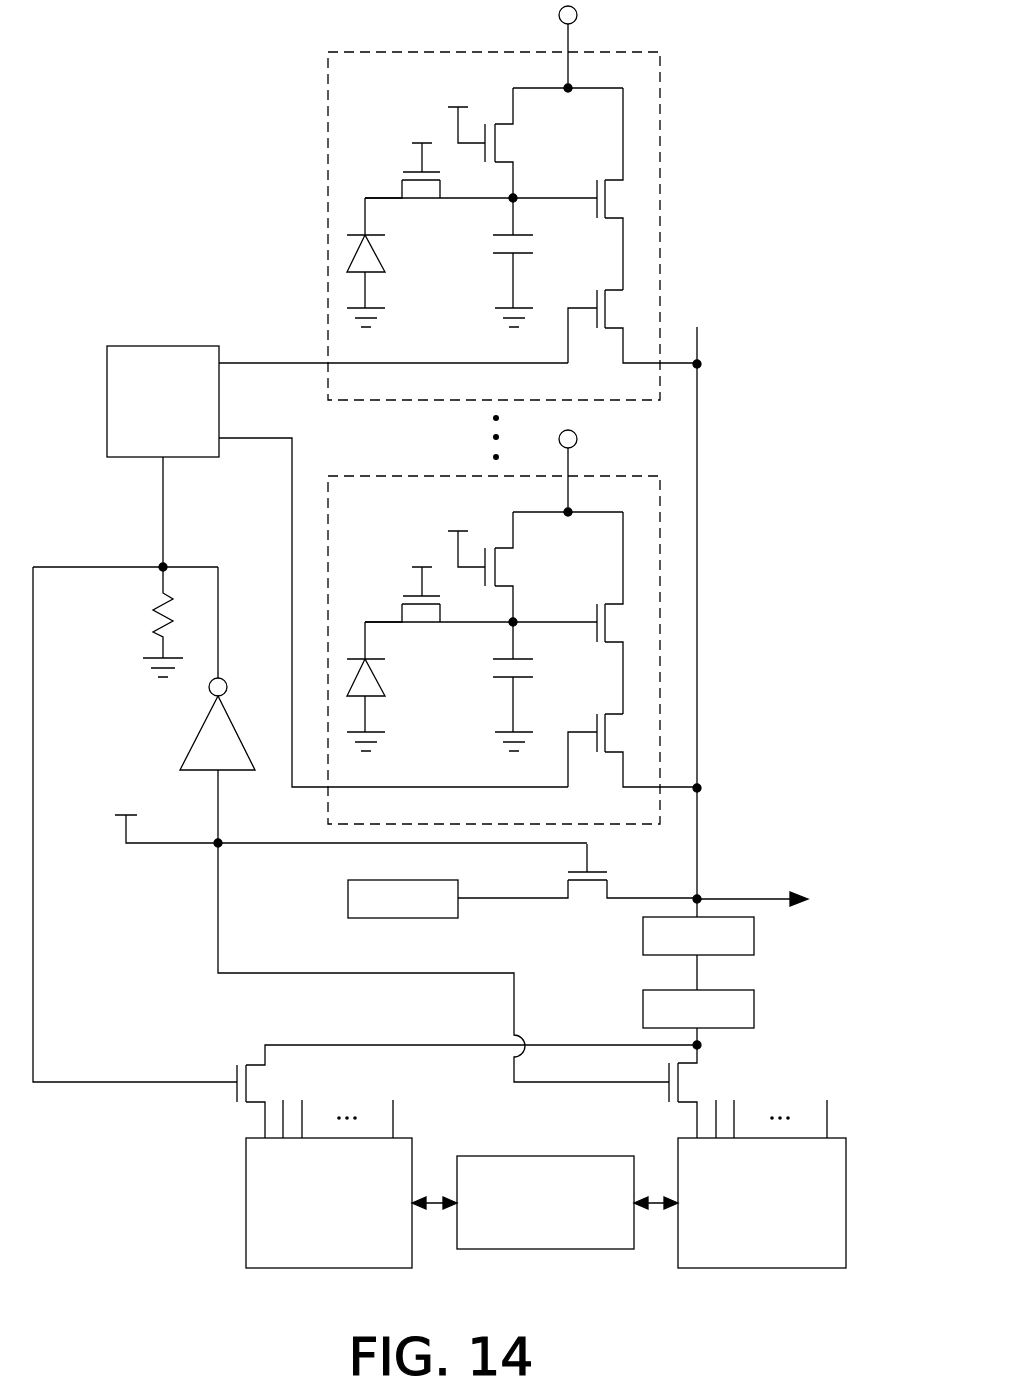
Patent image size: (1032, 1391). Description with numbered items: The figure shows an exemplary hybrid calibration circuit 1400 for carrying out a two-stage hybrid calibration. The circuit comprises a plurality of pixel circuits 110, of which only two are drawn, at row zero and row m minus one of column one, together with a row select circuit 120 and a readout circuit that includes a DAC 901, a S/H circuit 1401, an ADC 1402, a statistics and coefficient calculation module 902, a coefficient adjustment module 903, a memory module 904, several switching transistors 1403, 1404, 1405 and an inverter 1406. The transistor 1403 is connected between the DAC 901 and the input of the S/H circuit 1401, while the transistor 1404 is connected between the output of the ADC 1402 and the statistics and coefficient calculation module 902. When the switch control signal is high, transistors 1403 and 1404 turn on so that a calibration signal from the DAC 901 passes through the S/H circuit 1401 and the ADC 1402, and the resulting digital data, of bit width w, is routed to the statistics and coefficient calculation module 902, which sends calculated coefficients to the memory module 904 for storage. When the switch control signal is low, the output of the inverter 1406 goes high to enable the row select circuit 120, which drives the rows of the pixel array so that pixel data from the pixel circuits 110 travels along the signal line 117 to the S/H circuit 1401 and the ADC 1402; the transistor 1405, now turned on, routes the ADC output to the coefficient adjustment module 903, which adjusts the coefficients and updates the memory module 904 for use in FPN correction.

The hybrid calibration circuit 1400 is at (132, 107).
The pixel circuit 110 is at (661, 178).
The signal line 117 is at (697, 500).
The row select circuit 120 is at (168, 345).
The inverter 1406 is at (195, 738).
The DAC 901 is at (348, 900).
The transistor 1403 is at (587, 900).
The S/H circuit 1401 is at (754, 931).
The ADC 1402 is at (754, 1007).
The transistor 1404 is at (700, 1080).
The transistor 1405 is at (275, 1082).
The coefficient adjustment module 903 is at (246, 1190).
The memory module 904 is at (550, 1155).
The statistics and coefficient calculation module 902 is at (847, 1190).